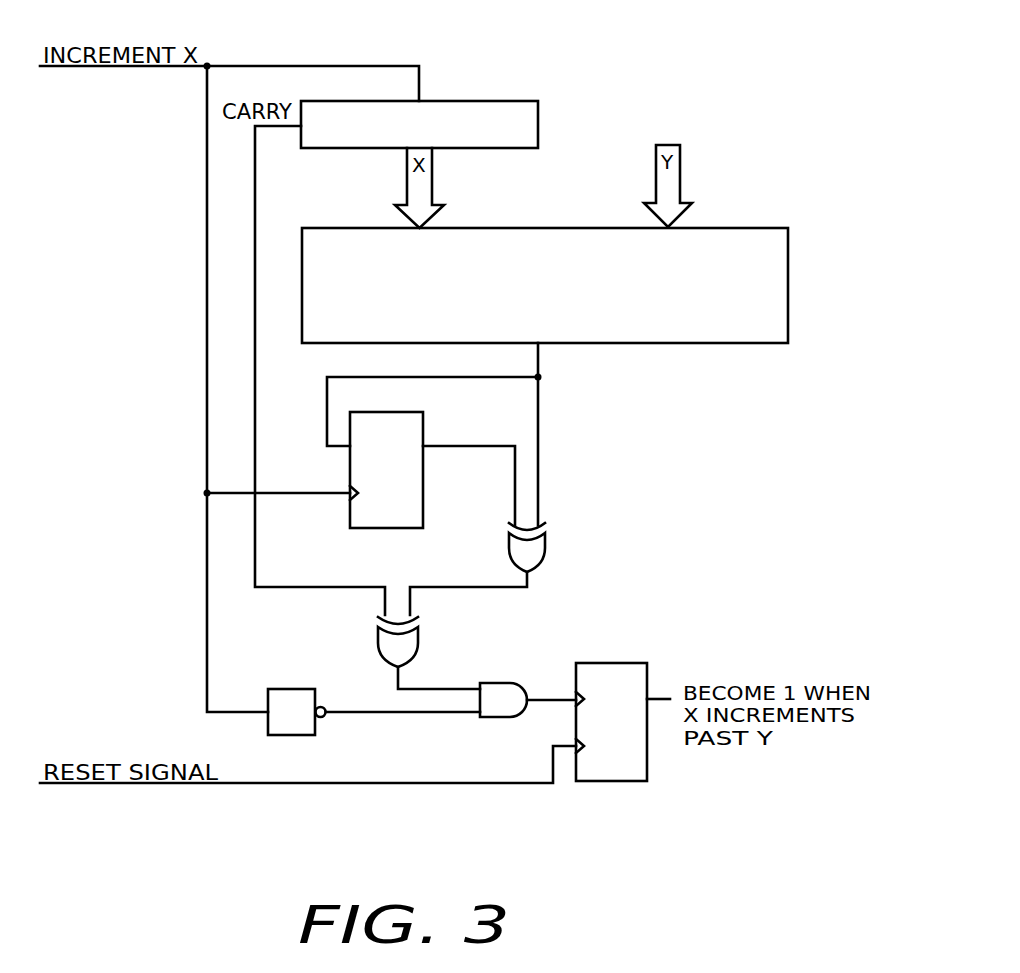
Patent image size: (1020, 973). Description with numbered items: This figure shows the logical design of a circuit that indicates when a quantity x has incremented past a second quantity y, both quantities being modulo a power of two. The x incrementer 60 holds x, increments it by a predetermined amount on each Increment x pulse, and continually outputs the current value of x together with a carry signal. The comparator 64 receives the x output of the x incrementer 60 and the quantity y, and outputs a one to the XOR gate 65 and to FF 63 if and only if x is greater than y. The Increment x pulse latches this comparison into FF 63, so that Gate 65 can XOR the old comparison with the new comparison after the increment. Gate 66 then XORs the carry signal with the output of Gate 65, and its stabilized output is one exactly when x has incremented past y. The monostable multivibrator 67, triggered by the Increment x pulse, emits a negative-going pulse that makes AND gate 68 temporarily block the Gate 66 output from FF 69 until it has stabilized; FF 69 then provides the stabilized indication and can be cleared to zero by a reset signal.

The x incrementer 60 is at (539, 112).
The FF 63 is at (424, 509).
The comparator 64 is at (789, 292).
The XOR gate 65 is at (546, 546).
The Gate 66 (XOR gate) 66 is at (419, 636).
The monostable multivibrator 67 is at (292, 688).
The AND gate 68 is at (496, 683).
The FF 69 is at (610, 663).